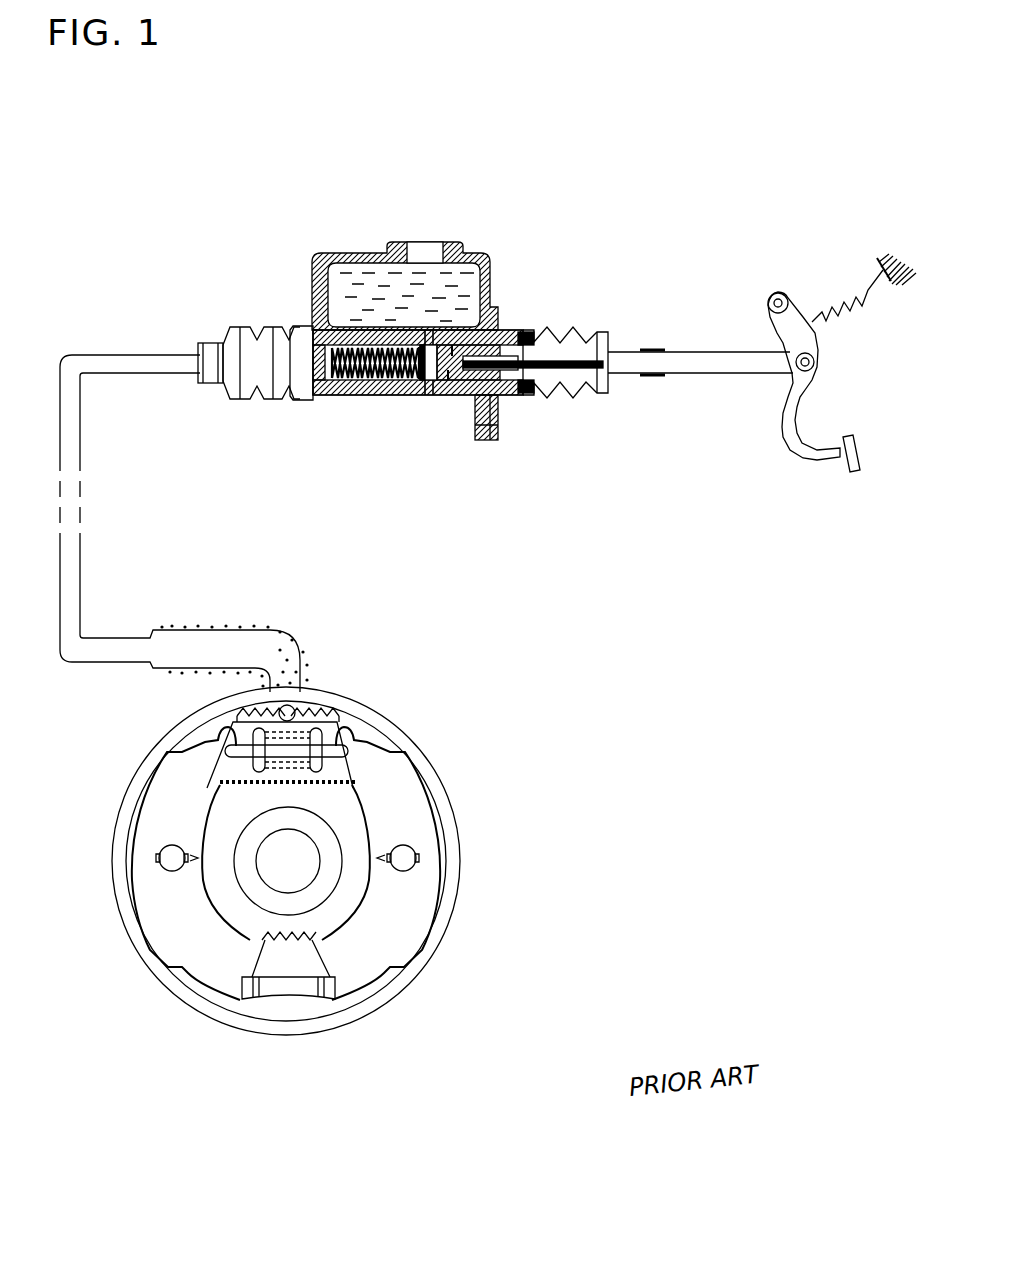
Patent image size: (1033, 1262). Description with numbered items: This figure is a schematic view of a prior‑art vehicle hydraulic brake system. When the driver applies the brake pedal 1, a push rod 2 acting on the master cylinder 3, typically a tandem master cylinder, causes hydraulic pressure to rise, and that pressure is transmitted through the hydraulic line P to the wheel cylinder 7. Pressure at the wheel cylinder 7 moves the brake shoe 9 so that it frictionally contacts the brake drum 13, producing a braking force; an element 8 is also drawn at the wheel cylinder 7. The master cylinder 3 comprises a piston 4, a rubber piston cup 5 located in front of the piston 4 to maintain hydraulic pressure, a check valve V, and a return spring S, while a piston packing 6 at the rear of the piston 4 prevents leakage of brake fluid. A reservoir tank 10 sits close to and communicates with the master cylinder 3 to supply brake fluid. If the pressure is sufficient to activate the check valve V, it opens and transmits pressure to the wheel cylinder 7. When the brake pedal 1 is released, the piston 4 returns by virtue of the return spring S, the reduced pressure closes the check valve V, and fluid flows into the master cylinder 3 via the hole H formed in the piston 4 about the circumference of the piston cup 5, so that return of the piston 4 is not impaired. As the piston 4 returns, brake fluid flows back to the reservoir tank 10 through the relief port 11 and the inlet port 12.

The brake pedal 1 is at (798, 393).
The push rod 2 is at (690, 352).
The master cylinder 3 is at (372, 396).
The piston 4 is at (441, 396).
The piston cup 5 is at (427, 396).
The piston packing 6 is at (500, 397).
The wheel cylinder 7 is at (330, 742).
The wheel cylinder seal 8 is at (345, 780).
The brake shoe 9 is at (177, 918).
The reservoir tank 10 is at (323, 256).
The relief port 11 is at (410, 344).
The inlet port 12 is at (437, 340).
The brake drum 13 is at (460, 905).
The hole H is at (427, 343).
The return spring S is at (332, 397).
The hydraulic line P is at (76, 505).
The check valve V is at (293, 355).